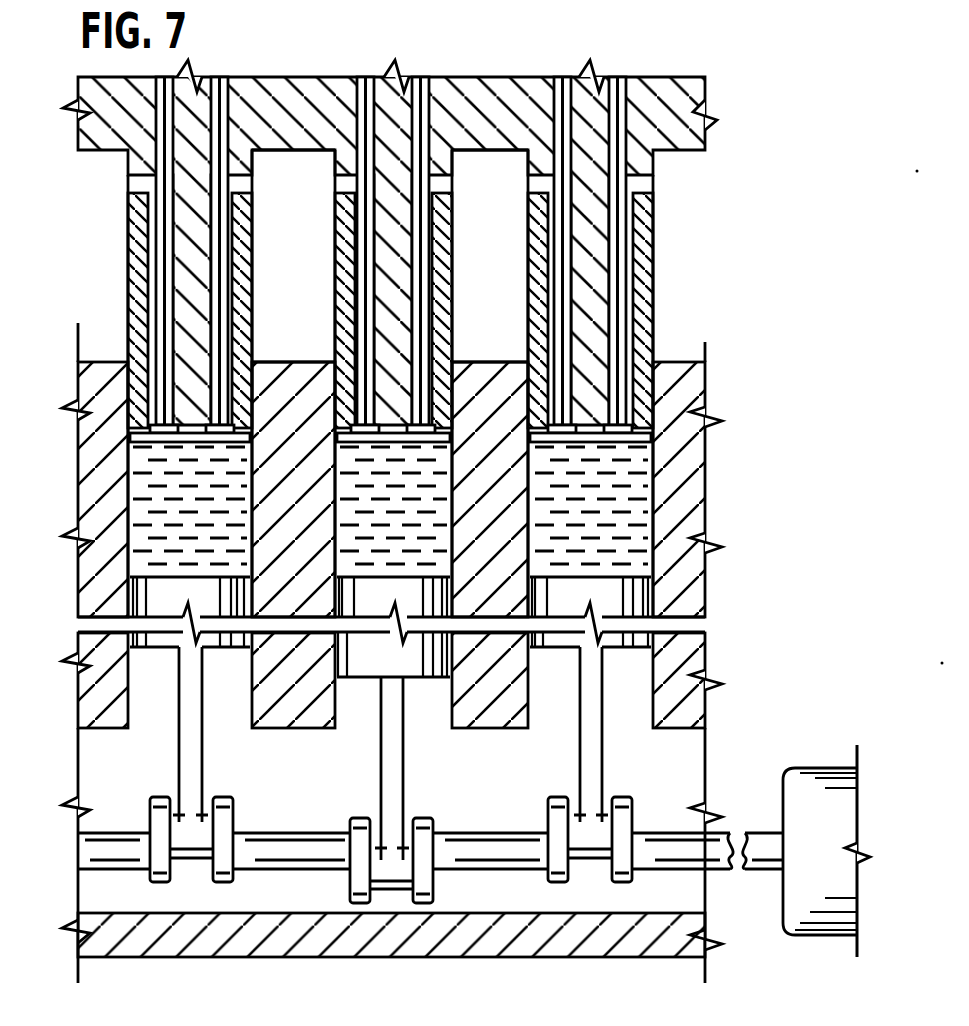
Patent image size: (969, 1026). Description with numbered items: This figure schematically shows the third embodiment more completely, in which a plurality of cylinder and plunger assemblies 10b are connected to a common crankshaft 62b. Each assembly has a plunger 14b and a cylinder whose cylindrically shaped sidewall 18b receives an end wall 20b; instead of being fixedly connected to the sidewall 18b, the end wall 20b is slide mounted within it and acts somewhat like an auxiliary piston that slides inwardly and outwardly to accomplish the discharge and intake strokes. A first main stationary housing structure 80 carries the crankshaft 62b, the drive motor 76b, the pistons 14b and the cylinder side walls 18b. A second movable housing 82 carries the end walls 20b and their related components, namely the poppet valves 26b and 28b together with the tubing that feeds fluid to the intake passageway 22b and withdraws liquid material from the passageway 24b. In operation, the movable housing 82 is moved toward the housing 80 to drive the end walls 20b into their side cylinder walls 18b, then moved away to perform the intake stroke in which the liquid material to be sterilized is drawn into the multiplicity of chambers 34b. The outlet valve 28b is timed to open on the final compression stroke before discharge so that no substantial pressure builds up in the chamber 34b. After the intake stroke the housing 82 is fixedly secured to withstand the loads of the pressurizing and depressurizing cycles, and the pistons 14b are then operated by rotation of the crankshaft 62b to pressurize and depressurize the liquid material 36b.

The cylinder and plunger assembly 10b is at (107, 291).
The plunger 14b is at (130, 597).
The cylinder sidewall 18b is at (97, 503).
The end wall 20b is at (137, 186).
The intake passageway 22b is at (132, 173).
The passageway 24b is at (248, 186).
The poppet valve 26b is at (128, 434).
The outlet valve 28b is at (258, 437).
The chamber 34b is at (147, 457).
The liquid material 36b is at (143, 482).
The crankshaft 62b is at (118, 840).
The drive motor 76b is at (820, 925).
The main stationary housing structure 80 is at (74, 650).
The movable housing 82 is at (104, 138).